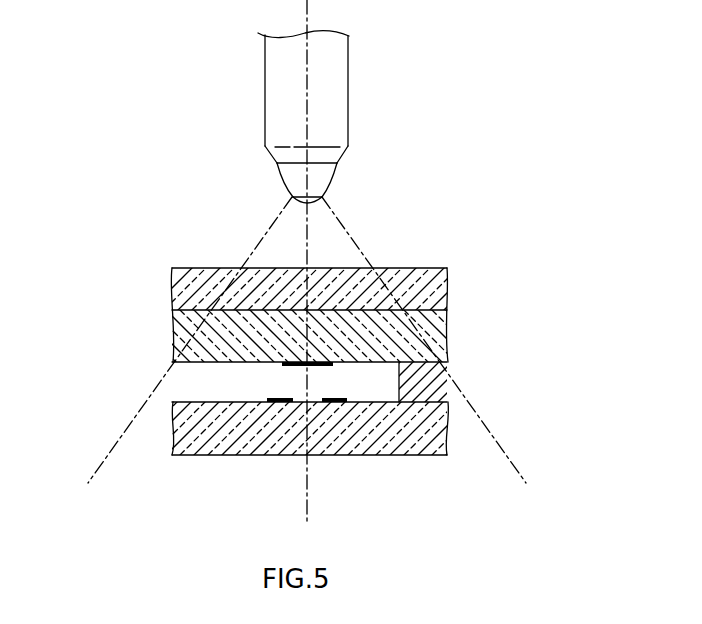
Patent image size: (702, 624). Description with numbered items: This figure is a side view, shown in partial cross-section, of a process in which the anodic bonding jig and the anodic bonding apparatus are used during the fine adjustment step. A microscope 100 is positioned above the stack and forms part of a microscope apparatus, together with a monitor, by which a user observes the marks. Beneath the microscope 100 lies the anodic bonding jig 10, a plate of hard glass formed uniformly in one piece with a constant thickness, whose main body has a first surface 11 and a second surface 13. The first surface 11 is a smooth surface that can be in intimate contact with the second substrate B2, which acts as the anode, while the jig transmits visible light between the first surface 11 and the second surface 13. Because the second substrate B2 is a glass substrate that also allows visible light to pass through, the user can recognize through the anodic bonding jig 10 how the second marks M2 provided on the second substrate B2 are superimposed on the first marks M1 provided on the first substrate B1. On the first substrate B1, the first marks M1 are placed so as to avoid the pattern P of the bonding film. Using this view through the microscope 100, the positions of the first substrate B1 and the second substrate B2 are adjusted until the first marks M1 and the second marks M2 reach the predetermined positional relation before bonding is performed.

The microscope 100 is at (357, 100).
The second surface 13 is at (424, 268).
The anodic bonding jig 10 is at (437, 289).
The first surface 11 is at (434, 318).
The second substrate B2 is at (438, 342).
The pattern of the bonding film P is at (437, 388).
The first substrate B1 is at (418, 455).
The second marks M2 is at (292, 368).
The first marks M1 is at (333, 404).